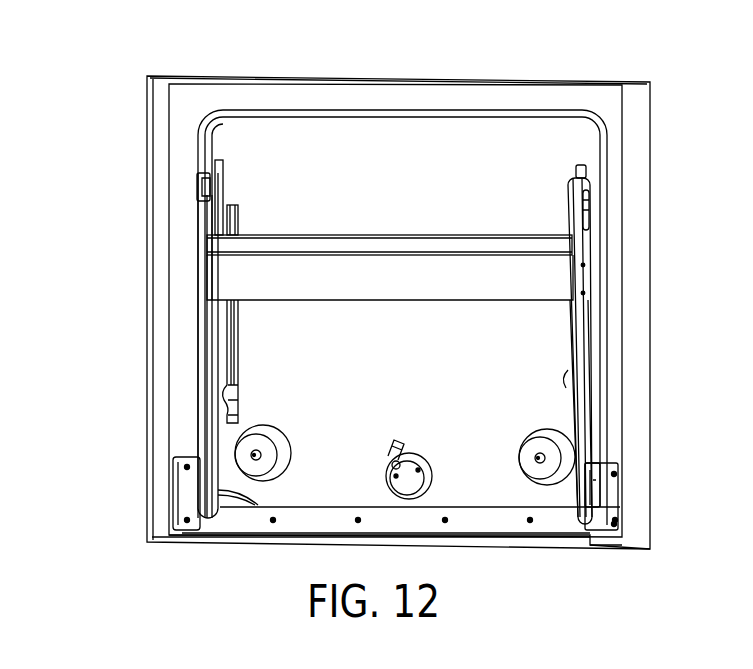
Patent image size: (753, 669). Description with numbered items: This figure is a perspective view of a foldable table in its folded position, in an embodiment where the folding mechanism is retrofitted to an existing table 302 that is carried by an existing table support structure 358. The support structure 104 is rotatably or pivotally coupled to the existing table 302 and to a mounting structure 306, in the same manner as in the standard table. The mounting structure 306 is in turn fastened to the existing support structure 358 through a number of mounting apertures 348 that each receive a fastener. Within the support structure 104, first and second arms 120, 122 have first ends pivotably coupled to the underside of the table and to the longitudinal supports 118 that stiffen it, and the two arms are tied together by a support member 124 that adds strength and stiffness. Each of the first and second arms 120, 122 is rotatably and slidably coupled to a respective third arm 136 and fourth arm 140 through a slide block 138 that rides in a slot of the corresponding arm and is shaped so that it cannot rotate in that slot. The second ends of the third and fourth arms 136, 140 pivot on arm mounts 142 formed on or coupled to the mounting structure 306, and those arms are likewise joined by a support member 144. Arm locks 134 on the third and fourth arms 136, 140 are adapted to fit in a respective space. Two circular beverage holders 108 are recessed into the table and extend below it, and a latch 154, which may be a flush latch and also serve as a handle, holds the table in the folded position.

The support structure 104 is at (589, 247).
The beverage holder 108 is at (272, 470).
The support 118 is at (228, 395).
The first arm 120 is at (213, 242).
The second arm 122 is at (582, 165).
The support member 124 is at (345, 240).
The arm lock 134 is at (207, 200).
The third arm 136 is at (204, 315).
The slide block 138 is at (589, 203).
The fourth arm 140 is at (585, 367).
The arm mount 142 is at (600, 493).
The support member 144 is at (553, 286).
The latch 154 is at (412, 452).
The existing table 302 is at (478, 137).
The mounting structure 306 is at (245, 523).
The mounting aperture 348 is at (180, 468).
The existing table support structure 358 is at (180, 348).